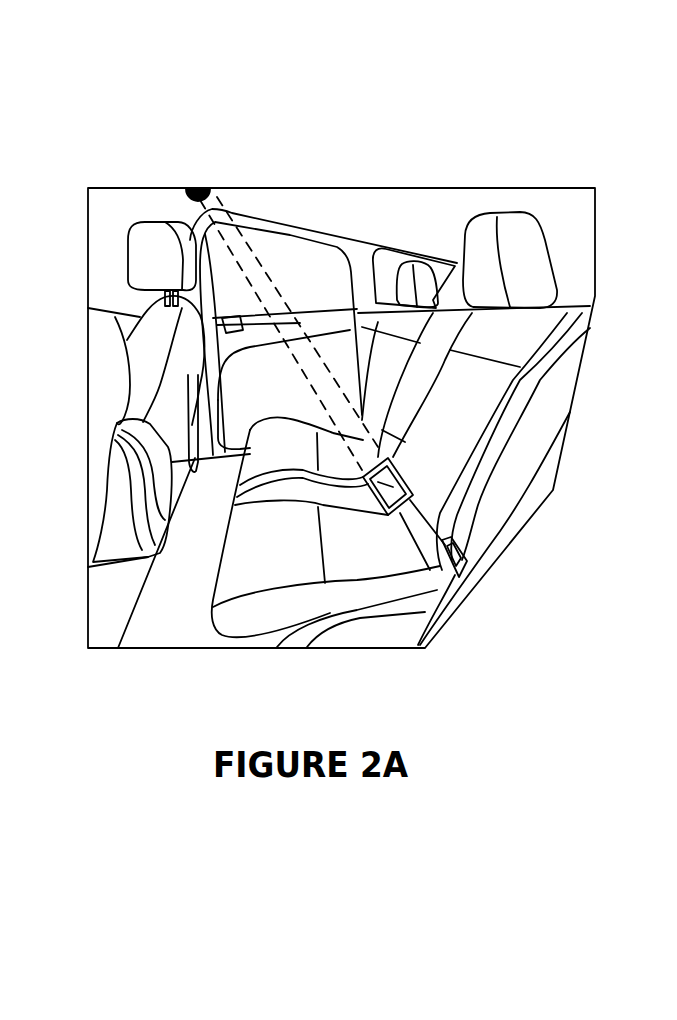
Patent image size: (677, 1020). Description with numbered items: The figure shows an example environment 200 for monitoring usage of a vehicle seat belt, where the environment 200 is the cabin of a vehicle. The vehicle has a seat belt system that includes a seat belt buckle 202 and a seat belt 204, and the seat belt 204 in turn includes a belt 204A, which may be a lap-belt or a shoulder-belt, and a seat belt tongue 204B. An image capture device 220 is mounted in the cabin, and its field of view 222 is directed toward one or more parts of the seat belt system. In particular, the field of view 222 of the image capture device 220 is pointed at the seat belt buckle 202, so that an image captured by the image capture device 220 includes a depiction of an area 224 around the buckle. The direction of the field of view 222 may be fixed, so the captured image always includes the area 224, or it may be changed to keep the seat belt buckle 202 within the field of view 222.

The environment 200 is at (483, 168).
The seat belt buckle 202 is at (400, 497).
The seat belt 204 is at (473, 517).
The belt 204A is at (483, 473).
The seat belt tongue 204B is at (478, 583).
The image capture device 220 is at (198, 187).
The field of view 222 is at (285, 300).
The area 224 is at (365, 512).